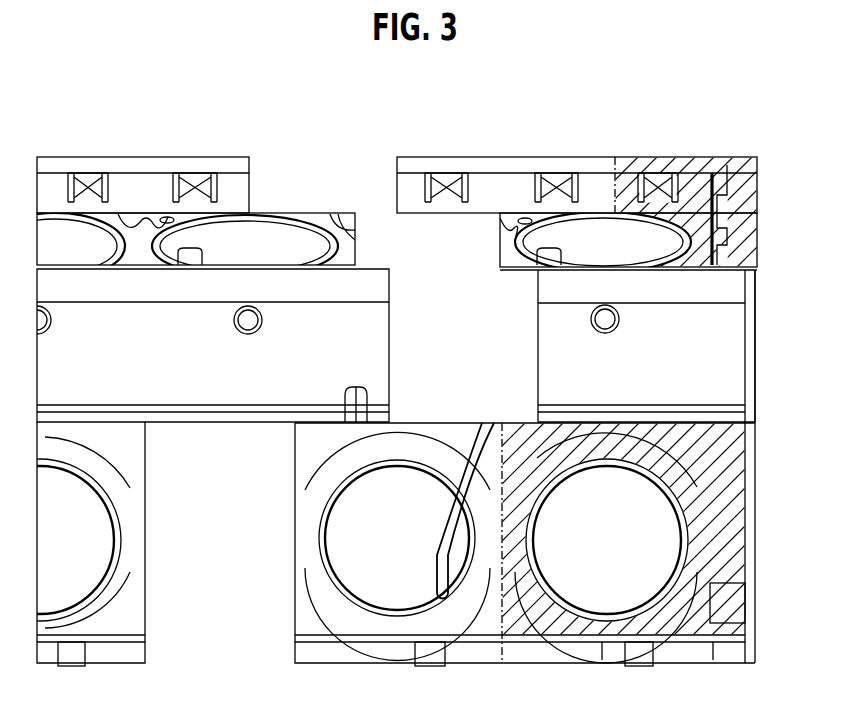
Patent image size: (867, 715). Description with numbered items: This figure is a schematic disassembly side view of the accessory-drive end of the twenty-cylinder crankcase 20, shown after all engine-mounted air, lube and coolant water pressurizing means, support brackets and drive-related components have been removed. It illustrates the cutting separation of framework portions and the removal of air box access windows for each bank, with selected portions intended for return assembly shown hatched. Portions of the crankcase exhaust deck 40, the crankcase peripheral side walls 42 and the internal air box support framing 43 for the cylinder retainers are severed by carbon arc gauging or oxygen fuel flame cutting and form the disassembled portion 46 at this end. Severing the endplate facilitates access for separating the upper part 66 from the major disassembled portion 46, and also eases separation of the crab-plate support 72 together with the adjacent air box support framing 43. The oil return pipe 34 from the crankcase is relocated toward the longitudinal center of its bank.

The twenty-cylinder crankcase 20 is at (193, 487).
The oil return pipe 34 is at (480, 458).
The crankcase exhaust deck 40 is at (224, 166).
The crankcase peripheral side wall 42 is at (660, 383).
The internal air box support framing 43 is at (727, 246).
The disassembled portion 46 is at (557, 150).
The upper part 66 is at (682, 160).
The crab-plate support 72 is at (737, 217).